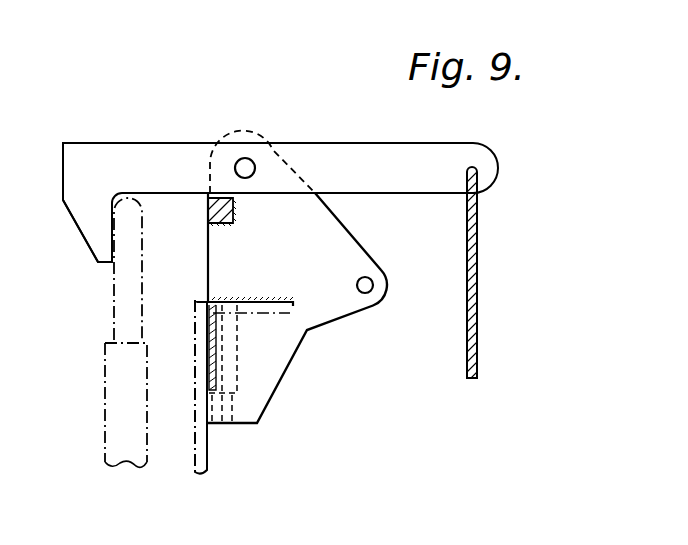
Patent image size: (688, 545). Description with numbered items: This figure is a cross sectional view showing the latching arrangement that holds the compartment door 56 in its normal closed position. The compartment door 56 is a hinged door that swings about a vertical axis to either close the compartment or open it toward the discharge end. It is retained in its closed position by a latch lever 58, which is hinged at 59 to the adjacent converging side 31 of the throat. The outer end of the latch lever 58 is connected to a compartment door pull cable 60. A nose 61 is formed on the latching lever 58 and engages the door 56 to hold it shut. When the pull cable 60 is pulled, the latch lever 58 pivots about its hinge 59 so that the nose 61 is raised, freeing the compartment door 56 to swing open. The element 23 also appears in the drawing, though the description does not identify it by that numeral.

The guide rod 23 is at (163, 460).
The converging side 31 is at (203, 453).
The compartment door 56 is at (106, 372).
The latch lever 58 is at (372, 149).
The hinge 59 is at (252, 168).
The compartment door pull cable 60 is at (477, 283).
The nose 61 is at (95, 238).